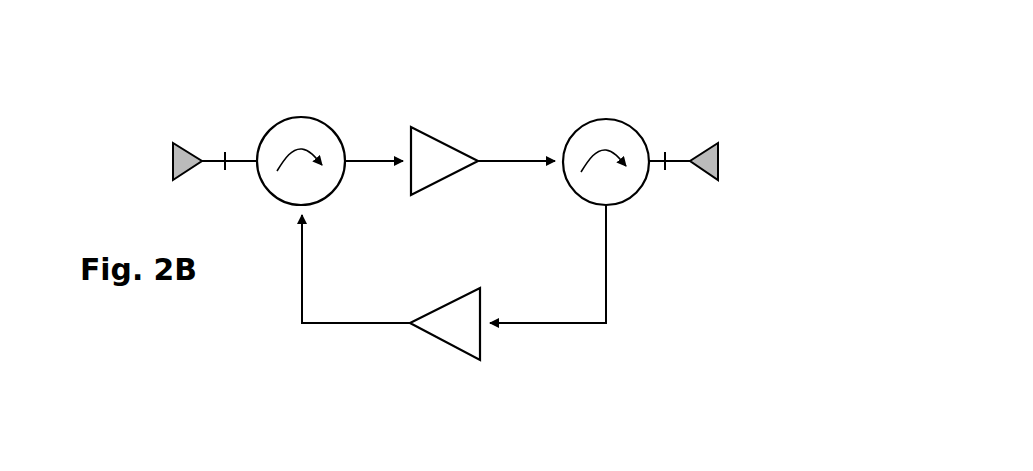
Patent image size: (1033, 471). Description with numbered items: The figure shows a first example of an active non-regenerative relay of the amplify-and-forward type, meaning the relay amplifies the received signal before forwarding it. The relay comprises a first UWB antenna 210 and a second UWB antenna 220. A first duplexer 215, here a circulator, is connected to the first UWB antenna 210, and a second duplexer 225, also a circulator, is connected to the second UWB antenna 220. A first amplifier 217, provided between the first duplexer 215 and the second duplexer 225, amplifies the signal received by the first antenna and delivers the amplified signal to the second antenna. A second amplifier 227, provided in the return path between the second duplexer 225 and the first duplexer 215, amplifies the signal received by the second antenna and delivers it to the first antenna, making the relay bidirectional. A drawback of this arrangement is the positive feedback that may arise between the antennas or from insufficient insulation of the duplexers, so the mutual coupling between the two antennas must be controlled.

The first UWB antenna 210 is at (162, 137).
The first duplexer 215 is at (302, 115).
The first amplifier 217 is at (453, 130).
The second duplexer 225 is at (630, 118).
The second UWB antenna 220 is at (723, 163).
The second amplifier 227 is at (470, 352).